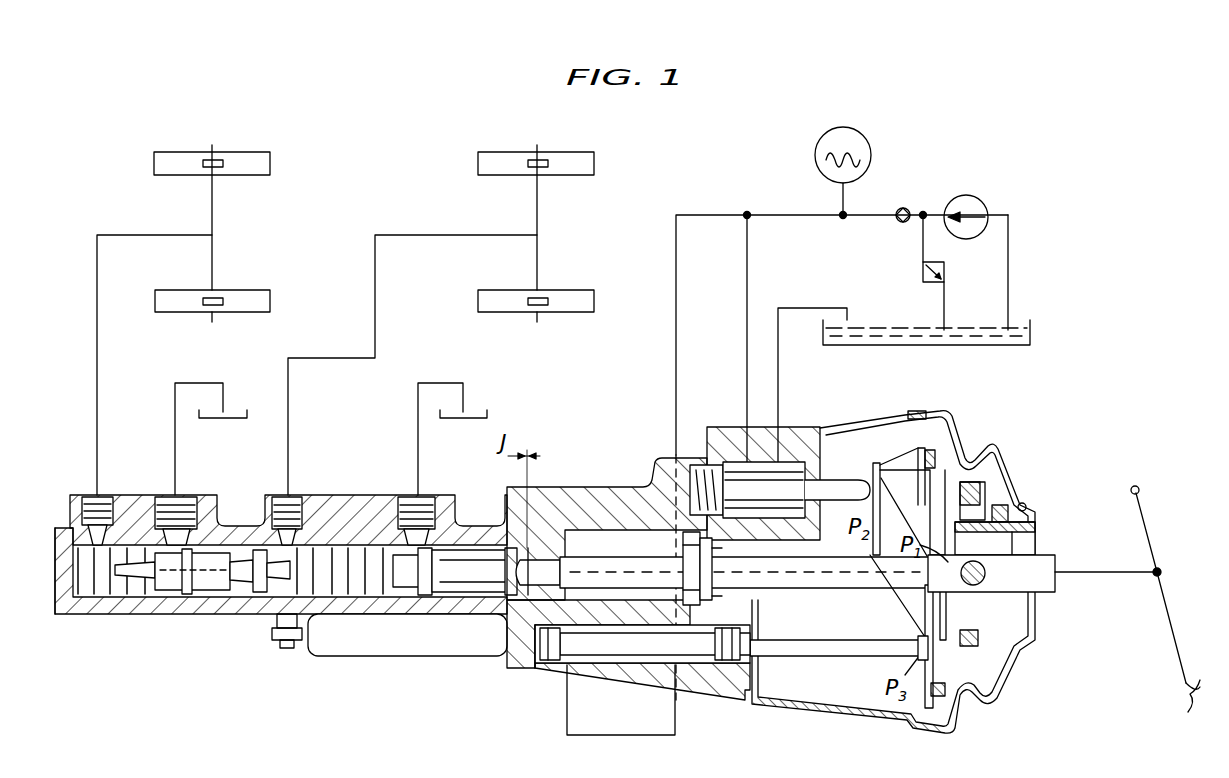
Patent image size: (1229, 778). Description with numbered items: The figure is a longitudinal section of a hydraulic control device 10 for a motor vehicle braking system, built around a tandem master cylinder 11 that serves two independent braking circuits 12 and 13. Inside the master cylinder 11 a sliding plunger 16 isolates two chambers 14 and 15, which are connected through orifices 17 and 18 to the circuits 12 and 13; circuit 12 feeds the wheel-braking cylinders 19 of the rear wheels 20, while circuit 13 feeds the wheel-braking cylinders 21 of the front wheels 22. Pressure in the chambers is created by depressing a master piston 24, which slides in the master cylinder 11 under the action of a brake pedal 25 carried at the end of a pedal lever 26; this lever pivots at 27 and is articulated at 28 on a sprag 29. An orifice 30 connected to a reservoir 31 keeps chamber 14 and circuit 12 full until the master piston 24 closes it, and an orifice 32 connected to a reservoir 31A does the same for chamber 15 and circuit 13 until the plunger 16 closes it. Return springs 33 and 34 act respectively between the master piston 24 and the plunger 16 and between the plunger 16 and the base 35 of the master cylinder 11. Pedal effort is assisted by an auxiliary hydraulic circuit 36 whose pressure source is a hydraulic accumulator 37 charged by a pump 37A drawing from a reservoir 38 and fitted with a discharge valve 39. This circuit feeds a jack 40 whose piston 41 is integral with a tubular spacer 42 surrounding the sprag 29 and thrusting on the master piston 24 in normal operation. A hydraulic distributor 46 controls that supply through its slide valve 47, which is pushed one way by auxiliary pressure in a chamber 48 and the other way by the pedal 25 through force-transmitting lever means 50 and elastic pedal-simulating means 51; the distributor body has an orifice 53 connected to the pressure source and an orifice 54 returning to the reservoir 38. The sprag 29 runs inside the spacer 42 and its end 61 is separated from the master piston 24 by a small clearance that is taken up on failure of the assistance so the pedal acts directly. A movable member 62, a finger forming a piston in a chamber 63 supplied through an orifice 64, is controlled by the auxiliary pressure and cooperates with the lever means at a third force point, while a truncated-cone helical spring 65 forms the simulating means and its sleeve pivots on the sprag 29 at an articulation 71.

The hydraulic control device 10 is at (587, 483).
The master cylinder 11 is at (155, 620).
The braking circuit 12 is at (375, 300).
The braking circuit 13 is at (97, 300).
The chamber 14 is at (387, 598).
The chamber 15 is at (125, 600).
The plunger 16 is at (207, 575).
The orifice 17 is at (287, 495).
The orifice 18 is at (94, 495).
The wheel-braking cylinders 19 is at (539, 234).
The rear wheels 20 is at (594, 163).
The wheel-braking cylinders 21 is at (214, 234).
The front wheels 22 is at (270, 163).
The master piston 24 is at (467, 587).
The brake pedal 25 is at (1184, 715).
The pedal lever 26 is at (1178, 630).
The pivot 27 is at (1135, 482).
The articulation 28 is at (1165, 566).
The sprag 29 is at (1050, 556).
The orifice 30 is at (400, 535).
The reservoir 31 is at (463, 418).
The reservoir 31A is at (223, 418).
The orifice 32 is at (165, 502).
The return spring 33 is at (352, 598).
The return spring 34 is at (100, 598).
The base 35 is at (55, 546).
The auxiliary hydraulic circuit 36 is at (717, 211).
The hydraulic accumulator 37 is at (845, 128).
The pump 37A is at (969, 197).
The reservoir 38 is at (1030, 333).
The discharge valve 39 is at (917, 272).
The jack 40 is at (676, 601).
The piston 41 is at (705, 604).
The tubular spacer 42 is at (632, 556).
The hydraulic distributor 46 is at (737, 450).
The slide valve 47 is at (845, 476).
The chamber 48 is at (708, 460).
The means for transmitting force 50 is at (896, 455).
The elastic means for simulating the pedal movement 51 is at (992, 482).
The orifice 53 is at (750, 424).
The orifice 54 is at (782, 424).
The end of the sprag 61 is at (538, 565).
The movable member 62 is at (845, 640).
The chamber 63 is at (636, 655).
The orifice 64 is at (558, 678).
The helical spring 65 is at (985, 655).
The articulation 71 is at (985, 573).